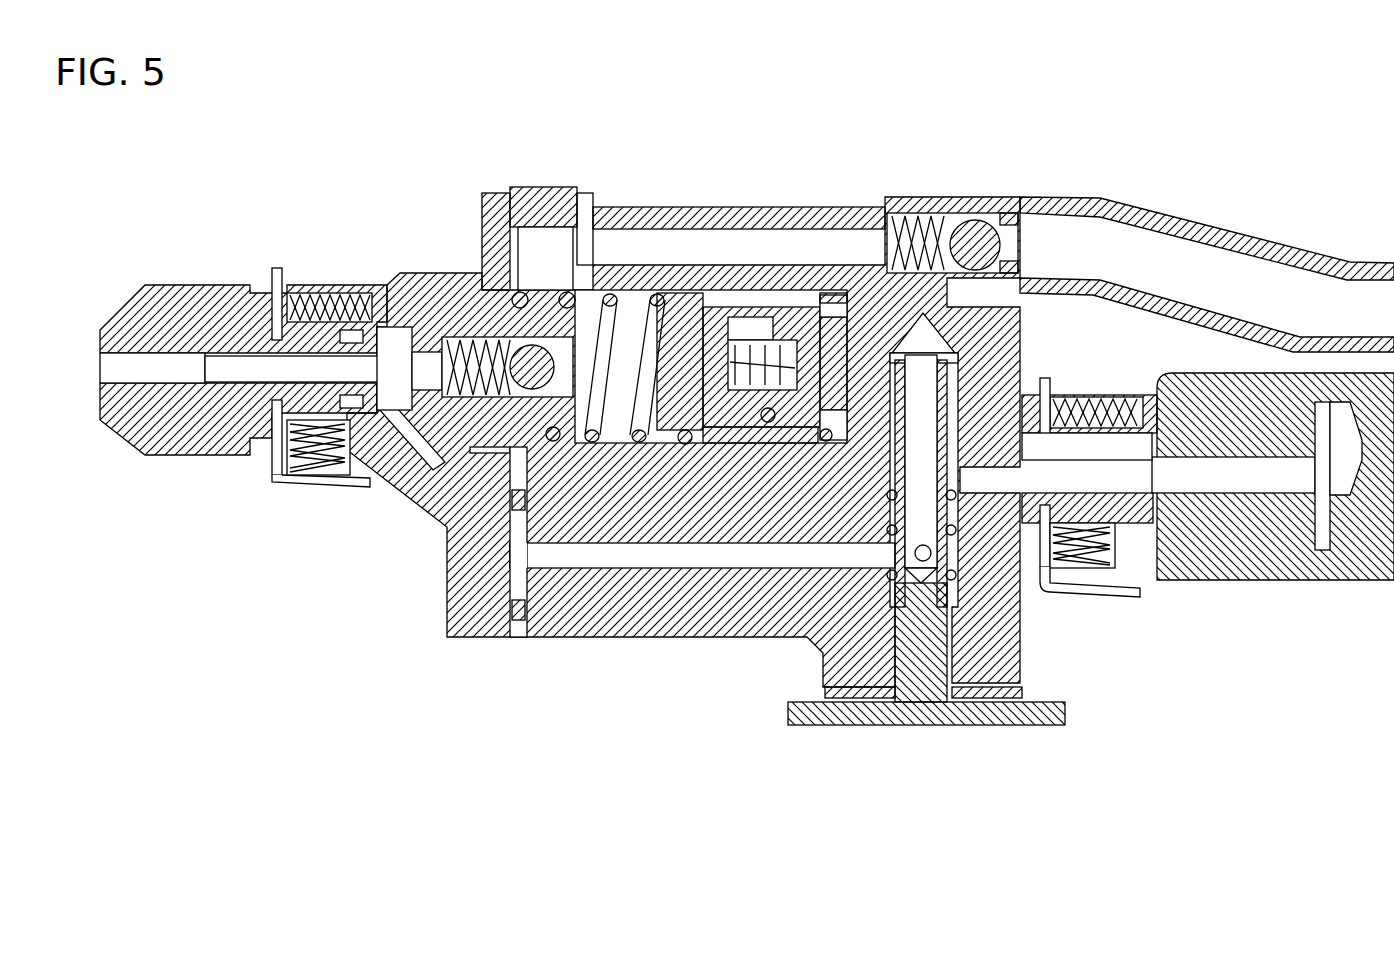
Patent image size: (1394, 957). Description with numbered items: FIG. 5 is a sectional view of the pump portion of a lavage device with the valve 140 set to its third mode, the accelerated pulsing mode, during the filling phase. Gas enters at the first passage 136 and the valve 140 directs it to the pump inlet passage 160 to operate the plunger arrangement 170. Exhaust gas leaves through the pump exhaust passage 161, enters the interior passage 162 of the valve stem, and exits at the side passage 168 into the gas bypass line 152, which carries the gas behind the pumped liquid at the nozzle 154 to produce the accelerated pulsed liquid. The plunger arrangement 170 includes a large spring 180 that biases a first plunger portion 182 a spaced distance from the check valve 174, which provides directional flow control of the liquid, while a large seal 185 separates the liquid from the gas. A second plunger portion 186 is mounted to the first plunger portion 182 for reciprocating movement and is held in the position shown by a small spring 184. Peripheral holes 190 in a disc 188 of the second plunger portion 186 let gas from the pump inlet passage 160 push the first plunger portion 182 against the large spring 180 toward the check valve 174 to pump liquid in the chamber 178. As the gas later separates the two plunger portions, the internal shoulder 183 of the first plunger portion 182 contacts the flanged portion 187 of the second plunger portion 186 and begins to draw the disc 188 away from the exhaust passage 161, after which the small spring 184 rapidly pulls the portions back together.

The first passage 136 is at (1117, 463).
The valve 140 is at (926, 728).
The gas bypass line 152 is at (620, 568).
The nozzle 154 is at (197, 453).
The pump inlet passage 160 is at (877, 353).
The pump exhaust passage 161 is at (892, 276).
The interior passage 162 is at (932, 360).
The side passage 168 is at (898, 547).
The plunger arrangement 170 is at (744, 305).
The check valve 174 is at (460, 337).
The chamber 178 is at (553, 433).
The large spring 180 is at (575, 296).
The first plunger portion 182 is at (705, 287).
The internal shoulder 183 is at (766, 414).
The small spring 184 is at (757, 318).
The large seal 185 is at (680, 440).
The second plunger portion 186 is at (835, 295).
The flanged portion 187 is at (730, 330).
The disc 188 is at (828, 337).
The peripheral holes 190 is at (824, 437).